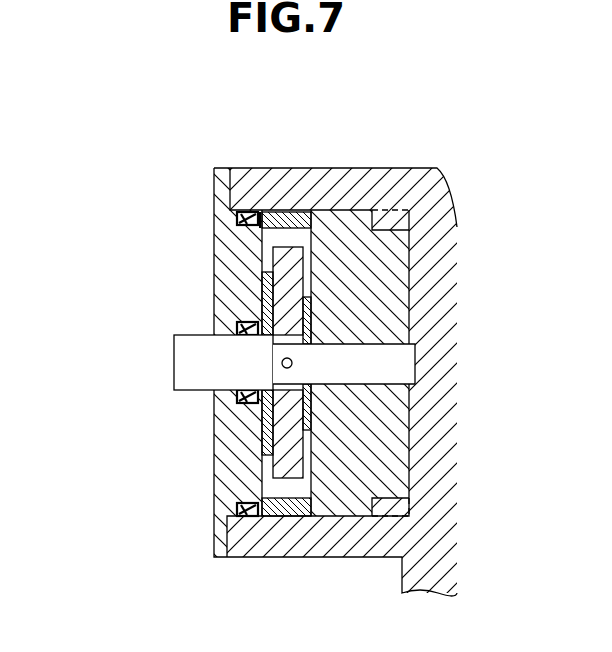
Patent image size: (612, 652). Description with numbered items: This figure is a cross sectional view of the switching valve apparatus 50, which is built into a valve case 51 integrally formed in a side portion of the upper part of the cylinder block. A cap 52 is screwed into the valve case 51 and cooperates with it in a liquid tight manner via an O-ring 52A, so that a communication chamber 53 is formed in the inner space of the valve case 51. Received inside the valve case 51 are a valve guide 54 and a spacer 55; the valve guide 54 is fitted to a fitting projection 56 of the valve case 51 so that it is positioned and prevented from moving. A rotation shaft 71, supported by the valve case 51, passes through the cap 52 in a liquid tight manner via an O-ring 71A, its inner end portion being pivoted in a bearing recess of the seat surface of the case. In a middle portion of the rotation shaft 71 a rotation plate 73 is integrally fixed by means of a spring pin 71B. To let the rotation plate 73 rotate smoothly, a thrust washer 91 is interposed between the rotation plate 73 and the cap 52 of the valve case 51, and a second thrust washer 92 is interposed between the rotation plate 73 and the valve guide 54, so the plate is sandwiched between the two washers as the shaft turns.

The switching valve apparatus 50 is at (288, 338).
The valve case 51 is at (330, 180).
The cap 52 is at (214, 186).
The O-ring 52A is at (250, 215).
The communication chamber 53 is at (273, 216).
The valve guide 54 is at (352, 228).
The spacer 55 is at (295, 213).
The fitting projection 56 is at (392, 230).
The rotation shaft 71 is at (239, 383).
The O-ring 71A is at (238, 398).
The spring pin 71B is at (281, 362).
The rotation plate 73 is at (280, 462).
The thrust washer 91 is at (270, 284).
The thrust washer 92 is at (300, 315).